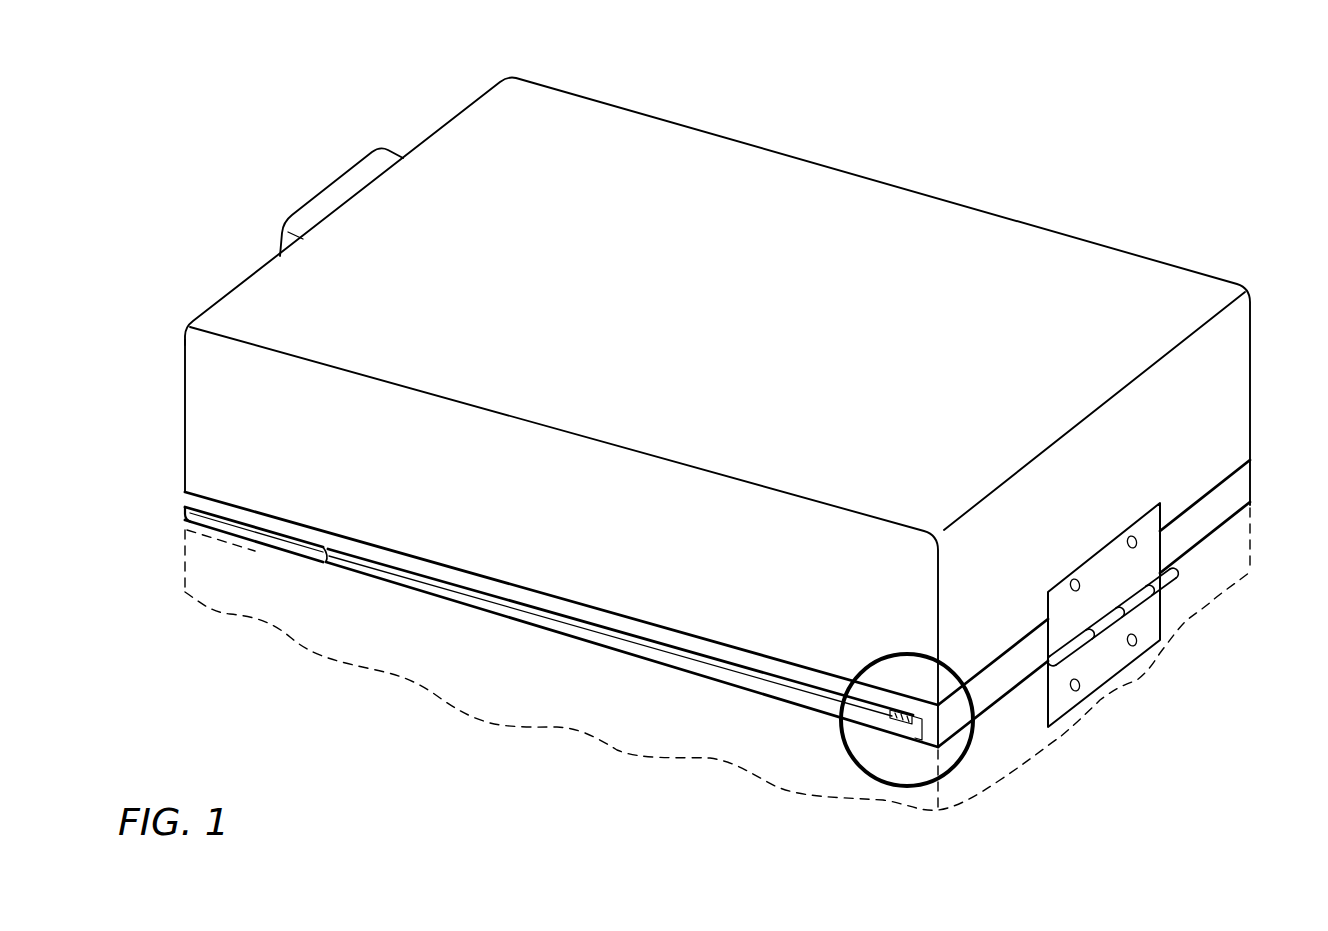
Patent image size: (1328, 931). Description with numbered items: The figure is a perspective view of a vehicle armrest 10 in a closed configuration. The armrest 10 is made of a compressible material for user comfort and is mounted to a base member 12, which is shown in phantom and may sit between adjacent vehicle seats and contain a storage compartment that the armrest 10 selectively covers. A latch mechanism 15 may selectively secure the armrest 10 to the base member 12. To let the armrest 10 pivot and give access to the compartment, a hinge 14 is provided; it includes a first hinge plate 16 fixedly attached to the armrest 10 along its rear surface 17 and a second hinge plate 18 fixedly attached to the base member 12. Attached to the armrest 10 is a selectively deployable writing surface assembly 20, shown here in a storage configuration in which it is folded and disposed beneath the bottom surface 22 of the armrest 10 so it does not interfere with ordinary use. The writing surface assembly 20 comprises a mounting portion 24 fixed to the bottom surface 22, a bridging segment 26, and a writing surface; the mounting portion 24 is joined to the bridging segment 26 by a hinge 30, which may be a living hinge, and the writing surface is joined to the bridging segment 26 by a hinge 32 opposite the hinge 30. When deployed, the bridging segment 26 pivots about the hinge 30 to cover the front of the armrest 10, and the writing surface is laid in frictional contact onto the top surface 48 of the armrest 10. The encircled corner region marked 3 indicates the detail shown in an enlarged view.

The vehicle armrest 10 is at (1120, 192).
The base member 12 is at (657, 730).
The hinge 14 is at (1122, 681).
The latch mechanism 15 is at (300, 188).
The first hinge plate 16 is at (1167, 540).
The rear surface 17 is at (1186, 414).
The second hinge plate 18 is at (1148, 616).
The writing surface assembly 20 is at (514, 603).
The bottom surface 22 is at (405, 557).
The mounting portion 24 is at (297, 529).
The bridging segment 26 is at (231, 529).
The hinge 30 is at (185, 506).
The hinge 32 is at (321, 569).
The top surface 48 is at (601, 275).
The detail circle (FIG. 3 reference) 3 is at (964, 764).